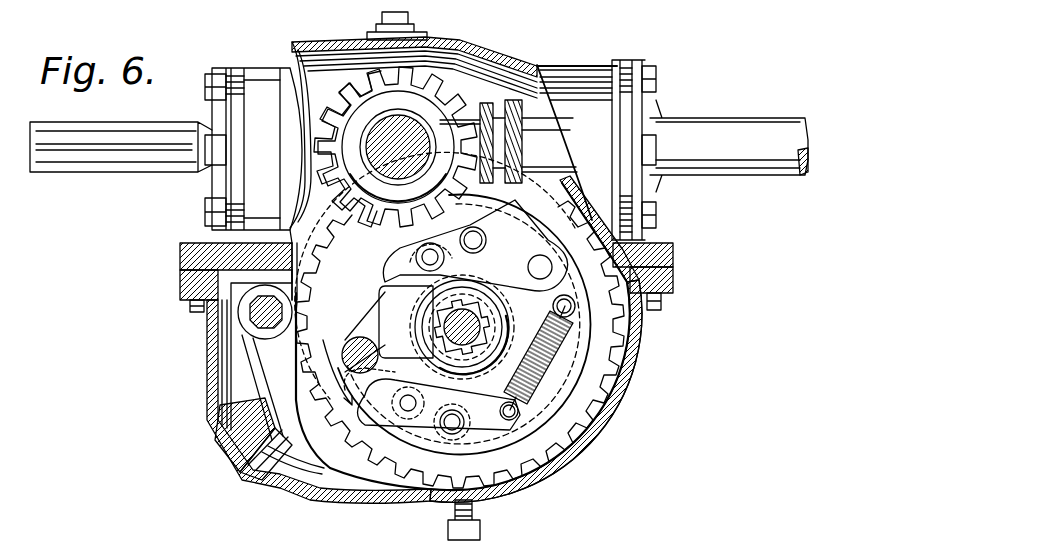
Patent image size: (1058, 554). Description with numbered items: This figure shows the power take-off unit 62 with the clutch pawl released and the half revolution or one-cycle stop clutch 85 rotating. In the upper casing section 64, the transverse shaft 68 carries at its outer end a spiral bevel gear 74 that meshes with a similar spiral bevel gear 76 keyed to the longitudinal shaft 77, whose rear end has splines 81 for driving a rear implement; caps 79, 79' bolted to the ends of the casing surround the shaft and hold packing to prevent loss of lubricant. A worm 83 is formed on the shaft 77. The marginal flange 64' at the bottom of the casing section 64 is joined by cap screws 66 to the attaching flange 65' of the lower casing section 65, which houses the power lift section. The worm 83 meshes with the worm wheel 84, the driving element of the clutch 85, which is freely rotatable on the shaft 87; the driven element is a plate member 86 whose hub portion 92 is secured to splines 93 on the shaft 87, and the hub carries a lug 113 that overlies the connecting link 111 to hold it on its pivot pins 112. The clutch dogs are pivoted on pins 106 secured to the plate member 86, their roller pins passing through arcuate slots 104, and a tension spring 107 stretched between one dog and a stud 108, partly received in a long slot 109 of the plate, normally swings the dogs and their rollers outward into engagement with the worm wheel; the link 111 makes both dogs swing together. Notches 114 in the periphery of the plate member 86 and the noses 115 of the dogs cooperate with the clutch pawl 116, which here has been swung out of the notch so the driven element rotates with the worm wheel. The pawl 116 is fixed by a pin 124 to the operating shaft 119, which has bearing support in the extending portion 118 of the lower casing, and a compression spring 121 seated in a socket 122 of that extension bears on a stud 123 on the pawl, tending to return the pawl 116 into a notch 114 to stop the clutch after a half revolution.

The power take-off unit 62 is at (525, 85).
The casing section 64 is at (257, 136).
The marginal flange 64' is at (209, 265).
The casing section 65 is at (294, 401).
The attaching flange 65' is at (169, 289).
The cap screws 66 is at (662, 305).
The transverse shaft 68 is at (445, 88).
The spiral bevel gear 74 is at (398, 147).
The spiral bevel gear 76 is at (323, 145).
The shaft 77 is at (556, 138).
The cap 79 is at (209, 138).
The cap 79' is at (710, 143).
The splines 81 is at (112, 133).
The worm 83 is at (484, 106).
The worm wheel 84 is at (631, 391).
The half revolution or one-cycle stop clutch 85 is at (615, 372).
The plate member 86 is at (590, 337).
The shaft 87 is at (475, 326).
The hub portion 92 is at (485, 300).
The splines 93 is at (466, 378).
The arcuate slots 104 is at (673, 270).
The pins 106 is at (452, 432).
The tension spring 107 is at (520, 400).
The stud 108 is at (575, 312).
The long slot 109 is at (594, 452).
The connecting link 111 is at (409, 260).
The pins 112 is at (408, 410).
The lug 113 is at (410, 312).
The notches 114 is at (315, 497).
The shoulder portions or noses 115 is at (380, 463).
The clutch pawl 116 is at (302, 462).
The extending portion 118 is at (230, 372).
The operating shaft 119 is at (248, 322).
The compression spring 121 is at (255, 440).
The socket 122 is at (247, 418).
The stud 123 is at (266, 387).
The pin 124 is at (240, 306).